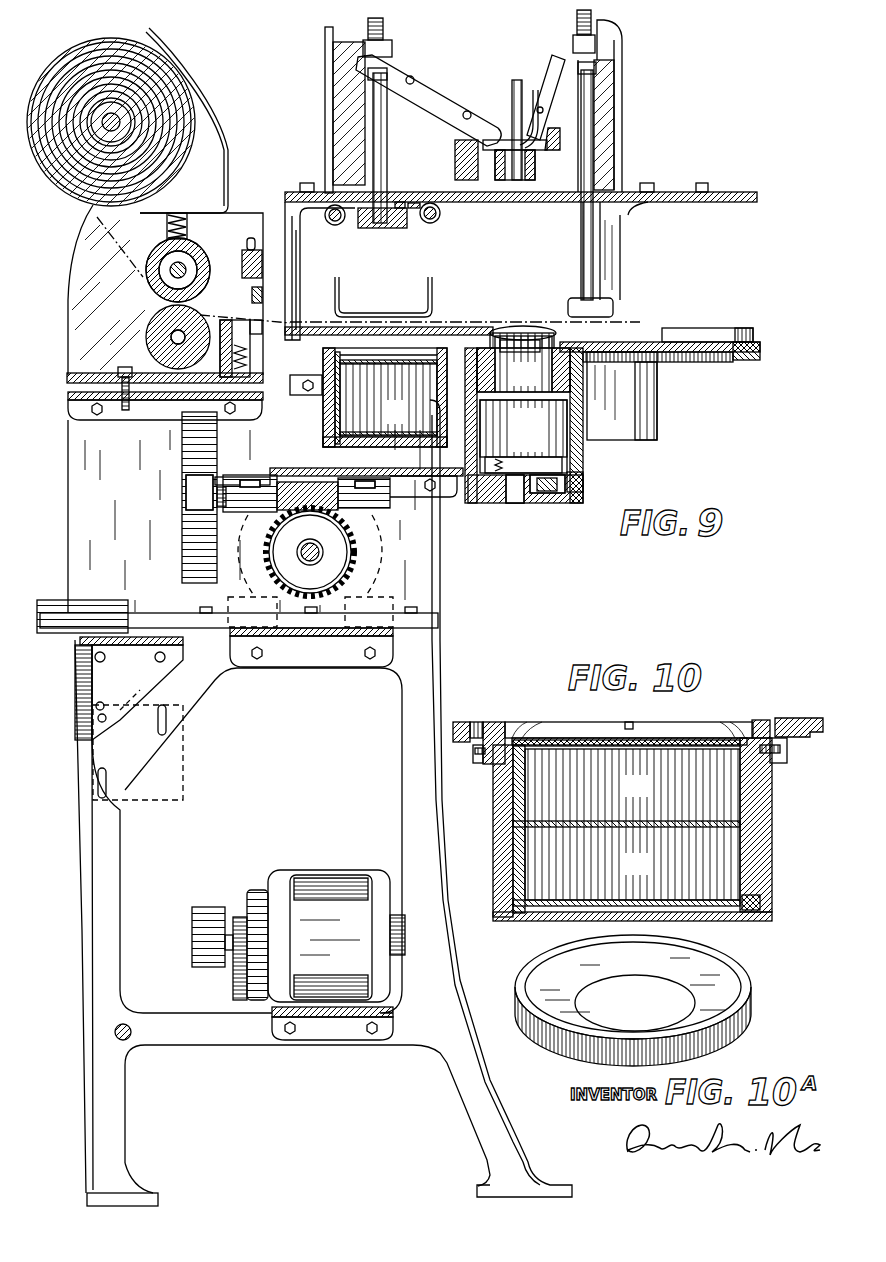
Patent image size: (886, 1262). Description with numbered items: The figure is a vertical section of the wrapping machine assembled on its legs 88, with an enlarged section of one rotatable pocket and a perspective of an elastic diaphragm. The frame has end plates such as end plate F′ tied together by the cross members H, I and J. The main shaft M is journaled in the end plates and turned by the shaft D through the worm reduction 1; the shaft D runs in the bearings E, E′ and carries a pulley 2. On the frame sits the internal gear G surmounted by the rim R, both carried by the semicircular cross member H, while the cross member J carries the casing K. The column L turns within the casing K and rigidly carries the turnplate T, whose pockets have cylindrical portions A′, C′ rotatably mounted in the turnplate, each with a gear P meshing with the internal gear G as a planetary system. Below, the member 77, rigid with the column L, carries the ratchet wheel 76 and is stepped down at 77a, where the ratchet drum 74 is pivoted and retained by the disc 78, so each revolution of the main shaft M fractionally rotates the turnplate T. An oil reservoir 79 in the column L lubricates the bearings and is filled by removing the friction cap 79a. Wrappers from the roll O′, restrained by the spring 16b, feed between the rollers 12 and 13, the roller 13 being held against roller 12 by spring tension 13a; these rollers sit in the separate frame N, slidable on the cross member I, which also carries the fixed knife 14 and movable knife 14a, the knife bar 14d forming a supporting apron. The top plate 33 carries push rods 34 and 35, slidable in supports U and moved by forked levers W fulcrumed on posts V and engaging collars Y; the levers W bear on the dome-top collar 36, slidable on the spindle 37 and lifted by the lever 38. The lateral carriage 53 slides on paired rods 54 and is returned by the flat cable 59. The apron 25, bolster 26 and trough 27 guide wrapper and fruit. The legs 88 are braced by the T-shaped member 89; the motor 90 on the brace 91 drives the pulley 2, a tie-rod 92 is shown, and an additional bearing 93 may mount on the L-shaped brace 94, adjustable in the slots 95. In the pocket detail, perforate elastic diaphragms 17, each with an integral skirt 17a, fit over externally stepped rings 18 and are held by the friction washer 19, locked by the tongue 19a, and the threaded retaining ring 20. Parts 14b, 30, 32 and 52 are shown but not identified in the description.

In FIG. 9, the wrapper roll O′ is at (58, 62).
In FIG. 9, the spring 16b is at (232, 142).
In FIG. 9, the frame N is at (165, 302).
In FIG. 9, the spring tension 13a is at (166, 228).
In FIG. 9, the roller 13 is at (150, 286).
In FIG. 9, the roller 12 is at (150, 320).
In FIG. 9, the knife 14a is at (242, 272).
In FIG. 9, the pin 14b is at (251, 238).
In FIG. 9, the knife bar 14d is at (232, 322).
In FIG. 9, the knife 14 is at (255, 345).
In FIG. 9, the cross member I is at (250, 398).
In FIG. 9, the push rod 35 is at (372, 124).
In FIG. 9, the push rod 34 is at (596, 103).
In FIG. 9, the top plate 33 is at (715, 190).
In FIG. 9, the support U is at (392, 47).
In FIG. 9, the collar Y is at (388, 80).
In FIG. 9, the lever W is at (445, 100).
In FIG. 9, the vertical spindle 37 is at (516, 85).
In FIG. 9, the dome-top collar 36 is at (528, 125).
In FIG. 9, the post V is at (458, 150).
In FIG. 9, the lever 38 is at (542, 150).
In FIG. 9, the flat cable 59 is at (400, 202).
In FIG. 9, the washer 52 is at (415, 203).
In FIG. 9, the paired rods 54 is at (441, 213).
In FIG. 9, the carriage 53 is at (425, 223).
In FIG. 9, the bracket 30 is at (308, 270).
In FIG. 9, the trough 27 is at (433, 276).
In FIG. 9, the bolster 26 is at (445, 325).
In FIG. 9, the apron 25 is at (490, 331).
In FIG. 9, the friction cap 79a is at (522, 333).
In FIG. 9, the column 32 is at (620, 258).
In FIG. 9, the turnplate T is at (640, 343).
In FIG. 10, the turnplate T is at (800, 722).
In FIG. 9, the rim R is at (690, 330).
In FIG. 9, the gear P is at (667, 362).
In FIG. 10, the gear P is at (784, 764).
In FIG. 9, the internal gear G is at (720, 362).
In FIG. 9, the cylindrical portion C′ is at (622, 396).
In FIG. 9, the cylindrical portion A′ is at (385, 397).
In FIG. 10, the cylindrical portion A′ is at (773, 838).
In FIG. 9, the cross member H is at (303, 396).
In FIG. 9, the casing K is at (464, 456).
In FIG. 9, the oil reservoir 79 is at (523, 364).
In FIG. 9, the column L is at (500, 436).
In FIG. 9, the member 77 is at (520, 468).
In FIG. 9, the ratchet wheel 76 is at (585, 482).
In FIG. 9, the drum 74 is at (482, 505).
In FIG. 9, the stepped extension 77a is at (516, 505).
In FIG. 9, the disc 78 is at (550, 504).
In FIG. 9, the cross member J is at (270, 470).
In FIG. 9, the worm reduction 1 is at (330, 506).
In FIG. 9, the pulley 2 is at (199, 497).
In FIG. 9, the shaft D is at (223, 487).
In FIG. 9, the main shaft M is at (310, 545).
In FIG. 9, the bearing E is at (252, 571).
In FIG. 9, the bearing E′ is at (369, 571).
In FIG. 9, the end plate F′ is at (240, 520).
In FIG. 9, the additional bearing 93 is at (88, 600).
In FIG. 9, the T-shaped member 89 is at (335, 649).
In FIG. 9, the L-shaped brace 94 is at (148, 660).
In FIG. 9, the slots 95 is at (140, 742).
In FIG. 9, the legs 88 is at (410, 783).
In FIG. 9, the motor 90 is at (298, 936).
In FIG. 9, the brace 91 is at (352, 1020).
In FIG. 9, the tie-rod 92 is at (132, 1032).
In FIG. 10, the retaining ring 20 is at (570, 722).
In FIG. 10, the friction washer 19 is at (683, 738).
In FIG. 10, the tongue 19a is at (500, 757).
In FIG. 10, the externally stepped ring 18 is at (493, 861).
In FIG. 10, the yieldable member 17 is at (690, 747).
In FIG. 10A, the yieldable member 17 is at (680, 980).
In FIG. 10, the annular peripheral skirt 17a is at (765, 888).
In FIG. 10A, the annular peripheral skirt 17a is at (748, 960).